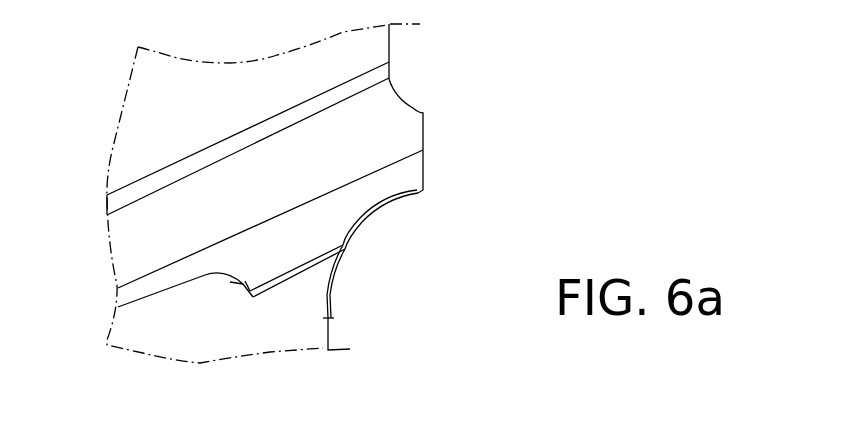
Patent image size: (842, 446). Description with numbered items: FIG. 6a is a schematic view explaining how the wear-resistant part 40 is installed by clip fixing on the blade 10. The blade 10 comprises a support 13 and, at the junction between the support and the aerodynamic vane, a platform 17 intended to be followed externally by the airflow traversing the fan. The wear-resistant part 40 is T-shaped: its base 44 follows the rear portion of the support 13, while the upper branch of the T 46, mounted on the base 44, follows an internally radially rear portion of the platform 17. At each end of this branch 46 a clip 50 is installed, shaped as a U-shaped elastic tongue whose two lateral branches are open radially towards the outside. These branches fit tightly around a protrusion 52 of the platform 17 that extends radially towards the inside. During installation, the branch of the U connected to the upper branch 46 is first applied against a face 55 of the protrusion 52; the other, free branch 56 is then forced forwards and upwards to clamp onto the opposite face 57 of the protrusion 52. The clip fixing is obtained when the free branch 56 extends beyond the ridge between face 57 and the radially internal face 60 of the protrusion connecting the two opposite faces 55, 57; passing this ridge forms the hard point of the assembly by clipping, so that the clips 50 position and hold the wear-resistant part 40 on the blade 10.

The blade 10 is at (396, 42).
The support 13 is at (150, 345).
The platform 17 is at (400, 183).
The wear-resistant part 40 is at (350, 287).
The base 44 is at (333, 303).
The upper branch of the T 46 is at (380, 201).
The clip 50 is at (269, 302).
The protrusion 52 is at (247, 271).
The face 55 is at (376, 264).
The free branch of U 56 is at (242, 292).
The opposite face 57 is at (210, 274).
The radially internal face 60 is at (277, 272).